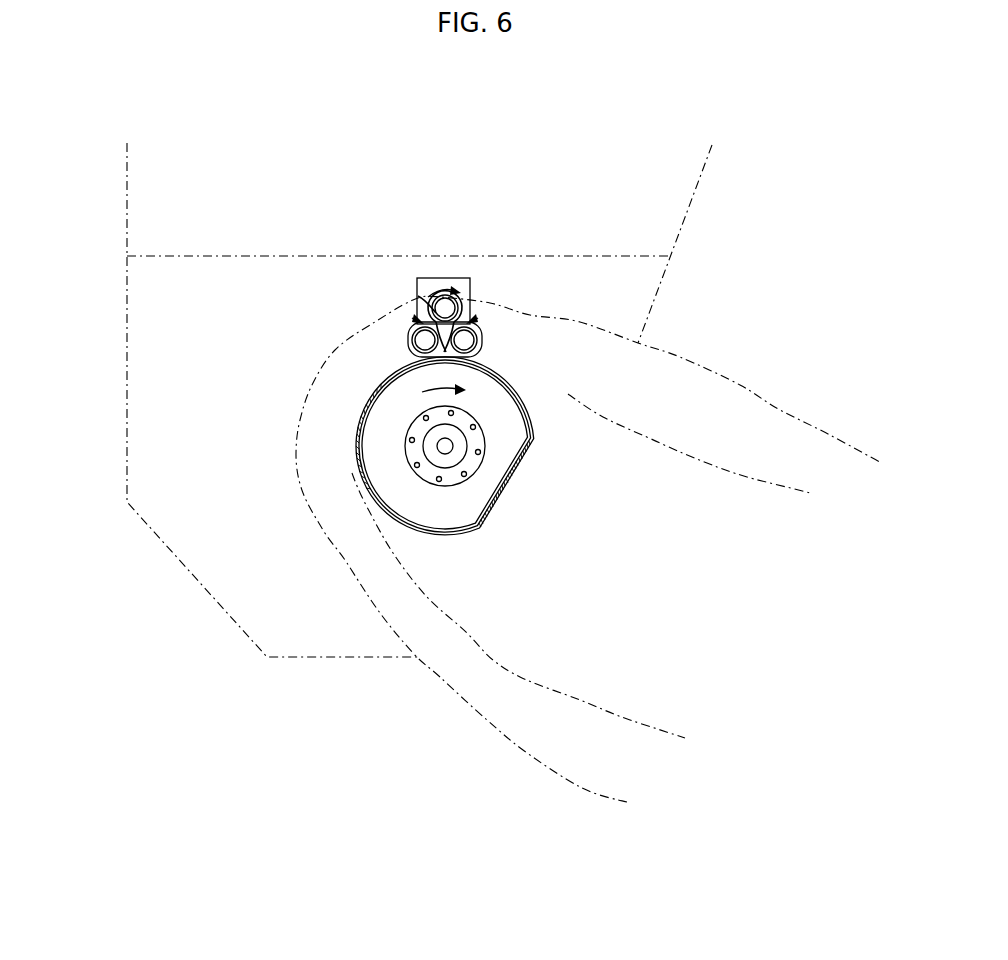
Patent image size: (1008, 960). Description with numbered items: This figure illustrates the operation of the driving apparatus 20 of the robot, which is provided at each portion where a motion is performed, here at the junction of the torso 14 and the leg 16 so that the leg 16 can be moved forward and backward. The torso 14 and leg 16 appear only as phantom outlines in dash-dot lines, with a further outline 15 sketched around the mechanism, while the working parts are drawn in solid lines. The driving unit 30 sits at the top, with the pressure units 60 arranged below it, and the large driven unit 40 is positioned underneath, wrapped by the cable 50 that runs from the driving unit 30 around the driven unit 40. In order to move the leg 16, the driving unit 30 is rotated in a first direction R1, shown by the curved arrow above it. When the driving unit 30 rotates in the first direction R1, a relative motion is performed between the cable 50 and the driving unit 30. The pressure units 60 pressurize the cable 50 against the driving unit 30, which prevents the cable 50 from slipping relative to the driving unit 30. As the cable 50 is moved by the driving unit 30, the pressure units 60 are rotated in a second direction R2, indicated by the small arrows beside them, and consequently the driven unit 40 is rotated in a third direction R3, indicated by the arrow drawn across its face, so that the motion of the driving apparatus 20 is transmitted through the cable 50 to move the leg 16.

The torso 14 is at (146, 318).
The outer housing contour 15 is at (297, 510).
The leg 16 is at (513, 692).
The driving apparatus 20 is at (574, 413).
The driving unit 30 is at (418, 296).
The driven unit 40 is at (477, 512).
The cable 50 is at (517, 393).
The pressure units 60 is at (470, 344).
The first direction R1 is at (444, 279).
The second direction R2 is at (447, 326).
The third direction R3 is at (444, 381).